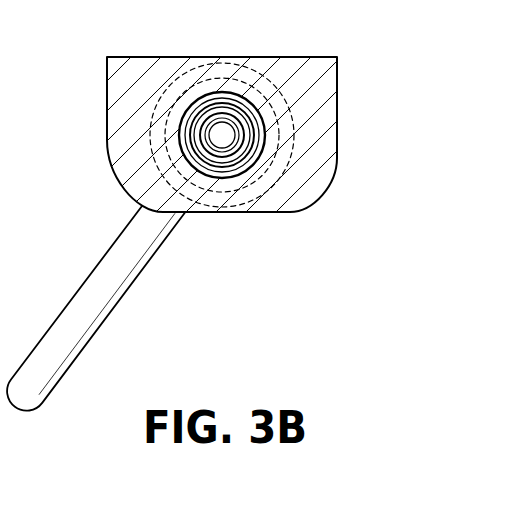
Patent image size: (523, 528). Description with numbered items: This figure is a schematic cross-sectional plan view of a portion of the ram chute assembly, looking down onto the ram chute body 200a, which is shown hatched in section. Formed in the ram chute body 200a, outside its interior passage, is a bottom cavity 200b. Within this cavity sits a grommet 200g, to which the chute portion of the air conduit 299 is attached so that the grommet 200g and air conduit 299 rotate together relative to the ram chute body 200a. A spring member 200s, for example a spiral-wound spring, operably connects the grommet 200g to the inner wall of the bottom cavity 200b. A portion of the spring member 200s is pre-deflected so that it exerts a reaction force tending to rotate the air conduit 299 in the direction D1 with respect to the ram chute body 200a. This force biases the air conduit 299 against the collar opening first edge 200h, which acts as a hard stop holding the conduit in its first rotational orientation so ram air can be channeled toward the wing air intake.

The ram chute body 200a is at (327, 100).
The grommet 200g is at (218, 117).
The spring member 200s is at (265, 148).
The bottom cavity 200b is at (237, 173).
The first edge 200h is at (160, 166).
The air conduit 299 is at (87, 316).
The direction D1 is at (362, 252).